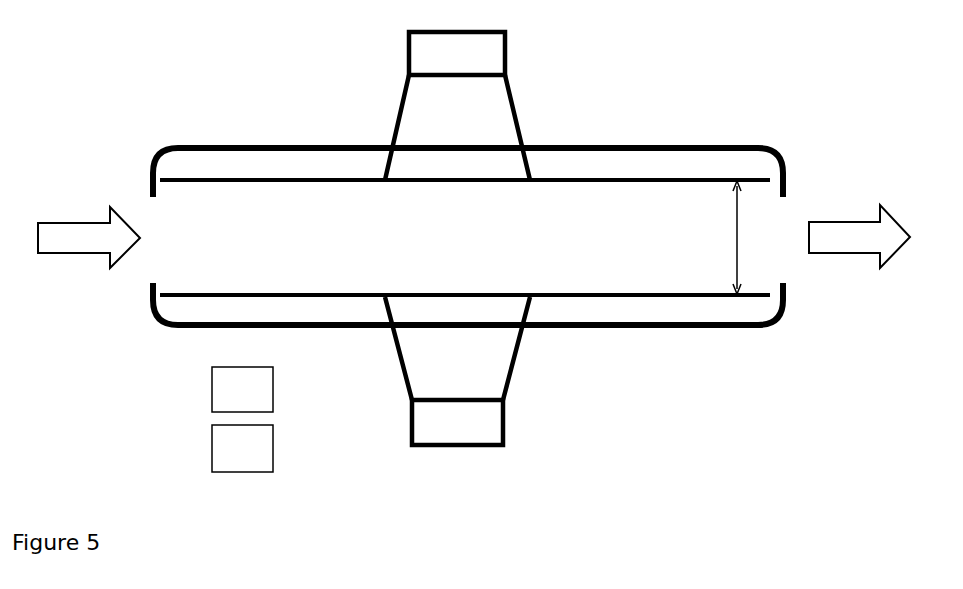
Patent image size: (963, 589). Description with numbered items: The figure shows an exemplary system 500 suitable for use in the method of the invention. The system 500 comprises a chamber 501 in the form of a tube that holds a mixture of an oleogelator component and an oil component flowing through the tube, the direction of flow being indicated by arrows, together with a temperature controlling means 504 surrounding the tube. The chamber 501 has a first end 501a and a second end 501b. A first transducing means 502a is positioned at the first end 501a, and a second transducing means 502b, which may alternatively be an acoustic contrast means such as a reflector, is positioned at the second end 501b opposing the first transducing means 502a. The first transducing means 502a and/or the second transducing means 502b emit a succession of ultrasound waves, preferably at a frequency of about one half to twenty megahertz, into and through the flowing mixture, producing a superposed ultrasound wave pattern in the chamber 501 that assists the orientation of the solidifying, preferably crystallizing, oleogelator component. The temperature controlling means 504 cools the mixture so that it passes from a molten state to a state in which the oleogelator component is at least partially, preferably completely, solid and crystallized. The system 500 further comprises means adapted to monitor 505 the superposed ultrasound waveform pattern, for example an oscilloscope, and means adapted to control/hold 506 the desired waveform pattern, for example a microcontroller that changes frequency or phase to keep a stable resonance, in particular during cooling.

The system 500 is at (125, 66).
The chamber 501 is at (610, 232).
The first end 501a is at (170, 230).
The second end 501b is at (775, 223).
The first transducing means 502a is at (472, 128).
The second transducing means 502b is at (472, 351).
The temperature controlling means 504 is at (273, 168).
The means adapted to monitor 505 is at (242, 389).
The means adapted to control/hold 506 is at (242, 448).